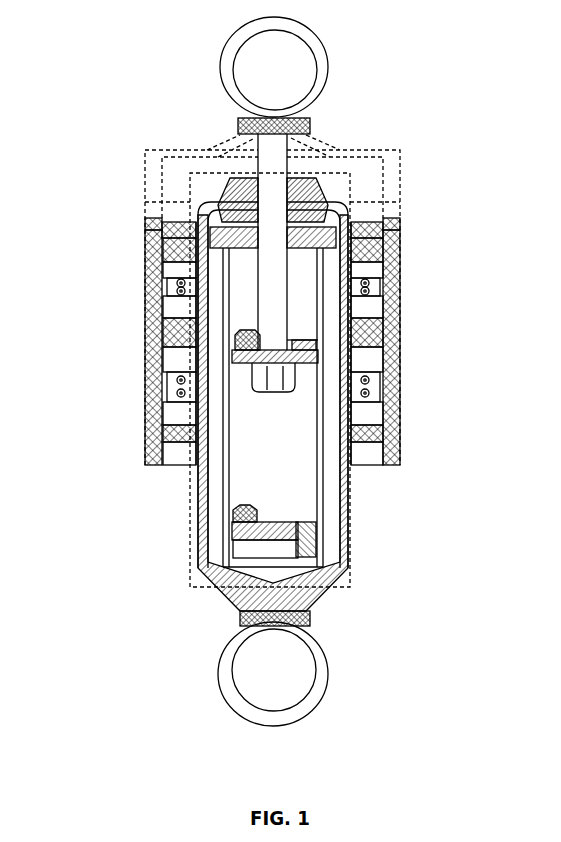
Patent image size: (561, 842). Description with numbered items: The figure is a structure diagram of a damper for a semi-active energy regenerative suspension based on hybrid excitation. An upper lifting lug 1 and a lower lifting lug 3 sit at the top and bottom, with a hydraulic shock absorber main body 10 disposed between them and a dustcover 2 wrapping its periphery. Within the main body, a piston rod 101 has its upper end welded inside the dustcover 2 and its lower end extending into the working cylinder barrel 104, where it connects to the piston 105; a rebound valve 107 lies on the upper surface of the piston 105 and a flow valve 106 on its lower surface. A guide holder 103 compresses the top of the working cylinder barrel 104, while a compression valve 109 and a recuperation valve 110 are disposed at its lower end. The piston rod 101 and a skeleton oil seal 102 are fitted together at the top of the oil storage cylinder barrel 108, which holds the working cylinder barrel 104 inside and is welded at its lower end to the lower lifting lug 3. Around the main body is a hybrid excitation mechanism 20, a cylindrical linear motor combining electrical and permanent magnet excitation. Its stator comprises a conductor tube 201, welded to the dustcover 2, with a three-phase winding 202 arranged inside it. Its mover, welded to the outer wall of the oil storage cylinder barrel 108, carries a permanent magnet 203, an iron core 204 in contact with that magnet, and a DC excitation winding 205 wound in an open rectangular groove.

The upper lifting lug 1 is at (327, 74).
The dustcover 2 is at (232, 138).
The lower lifting lug 3 is at (238, 623).
The hydraulic shock absorber main body 10 is at (238, 173).
The hybrid excitation mechanism 20 is at (178, 208).
The conductor tube 201 is at (143, 213).
The three-phase winding 202 is at (152, 280).
The permanent magnet 203 is at (165, 372).
The iron core 204 is at (175, 418).
The DC excitation winding 205 is at (390, 390).
The piston rod 101 is at (283, 152).
The skeleton oil seal 102 is at (313, 190).
The guide holder 103 is at (330, 230).
The working cylinder barrel 104 is at (325, 292).
The piston 105 is at (275, 355).
The flow valve 106 is at (295, 385).
The rebound valve 107 is at (237, 348).
The oil storage cylinder barrel 108 is at (347, 465).
The compression valve 109 is at (233, 520).
The recuperation valve 110 is at (315, 532).